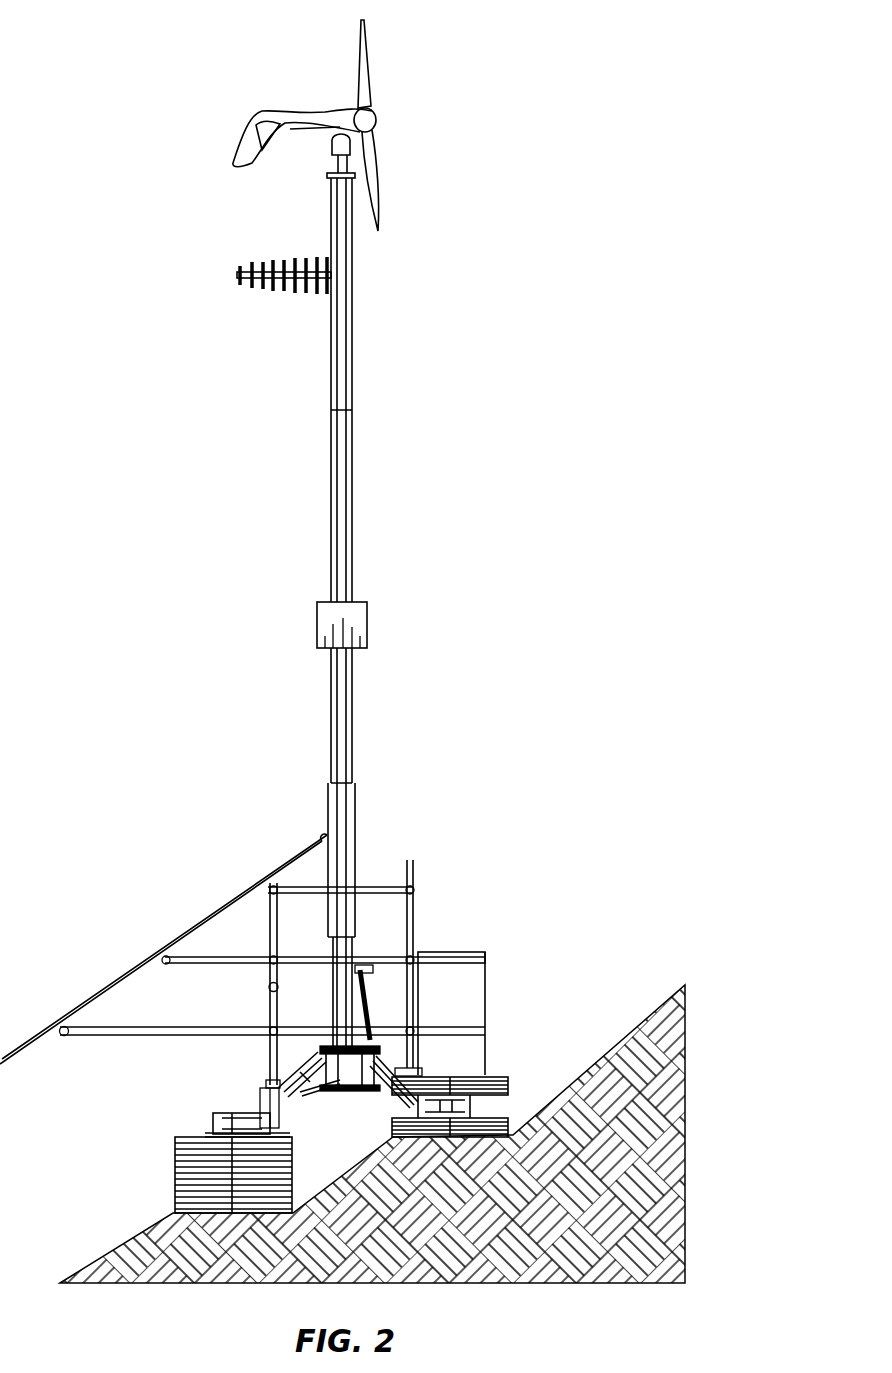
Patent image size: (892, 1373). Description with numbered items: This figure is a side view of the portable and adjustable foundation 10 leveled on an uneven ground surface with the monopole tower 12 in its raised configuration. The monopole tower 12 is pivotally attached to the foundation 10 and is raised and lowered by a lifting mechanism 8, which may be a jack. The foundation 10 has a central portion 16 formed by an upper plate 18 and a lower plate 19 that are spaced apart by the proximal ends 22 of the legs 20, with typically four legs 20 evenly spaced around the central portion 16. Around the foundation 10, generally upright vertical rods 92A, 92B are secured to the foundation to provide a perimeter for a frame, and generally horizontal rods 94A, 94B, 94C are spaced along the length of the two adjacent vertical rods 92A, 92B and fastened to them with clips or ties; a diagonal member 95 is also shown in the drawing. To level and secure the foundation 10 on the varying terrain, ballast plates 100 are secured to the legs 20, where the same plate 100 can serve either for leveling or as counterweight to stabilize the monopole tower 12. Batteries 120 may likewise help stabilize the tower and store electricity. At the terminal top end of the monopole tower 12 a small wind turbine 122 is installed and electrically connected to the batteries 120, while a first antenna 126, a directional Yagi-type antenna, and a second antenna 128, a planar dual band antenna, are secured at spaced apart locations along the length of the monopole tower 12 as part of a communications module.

The lifting mechanism 8 is at (355, 1044).
The foundation 10 is at (520, 1040).
The monopole tower 12 is at (306, 455).
The central portion 16 is at (328, 1136).
The upper plate 18 is at (372, 1042).
The lower plate 19 is at (318, 1050).
The legs 20 is at (388, 1080).
The proximal ends of legs 22 is at (365, 1094).
The vertical rod 92A is at (416, 870).
The vertical rod 92B is at (272, 860).
The horizontal rod 94A is at (376, 886).
The horizontal rod 94B is at (246, 963).
The horizontal rod 94C is at (190, 1036).
The diagonal brace 95 is at (182, 934).
The ballast plates 100 is at (140, 1185).
The batteries 120 is at (436, 951).
The wind turbine 122 is at (414, 102).
The first antenna 126 is at (238, 275).
The second antenna 128 is at (317, 626).